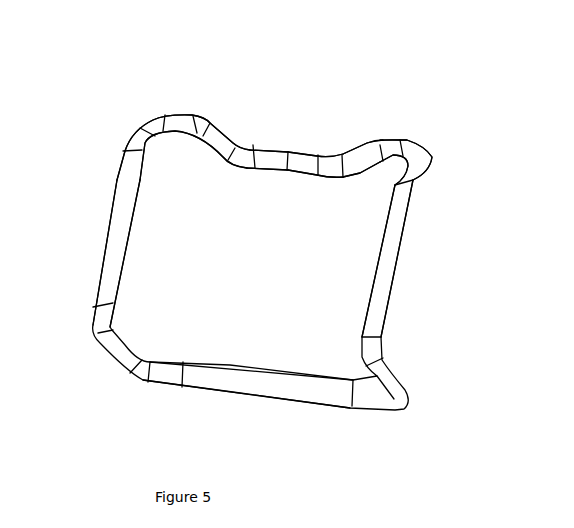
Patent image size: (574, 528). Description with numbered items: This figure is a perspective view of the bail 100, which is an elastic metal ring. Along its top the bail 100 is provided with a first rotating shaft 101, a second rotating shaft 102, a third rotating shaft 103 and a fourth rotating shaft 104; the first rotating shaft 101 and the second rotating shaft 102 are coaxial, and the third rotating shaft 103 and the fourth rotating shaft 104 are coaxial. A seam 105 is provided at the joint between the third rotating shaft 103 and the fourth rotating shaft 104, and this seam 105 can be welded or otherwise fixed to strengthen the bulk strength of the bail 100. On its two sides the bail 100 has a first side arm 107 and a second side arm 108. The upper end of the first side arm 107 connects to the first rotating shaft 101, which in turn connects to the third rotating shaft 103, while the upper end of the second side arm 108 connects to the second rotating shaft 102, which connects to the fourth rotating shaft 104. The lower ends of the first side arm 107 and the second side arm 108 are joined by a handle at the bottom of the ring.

The bail 100 is at (445, 232).
The first rotating shaft 101 is at (186, 122).
The second rotating shaft 102 is at (401, 142).
The third rotating shaft 103 is at (254, 150).
The fourth rotating shaft 104 is at (319, 156).
The seam 105 is at (288, 160).
The first side arm 107 is at (117, 217).
The second side arm 108 is at (395, 267).